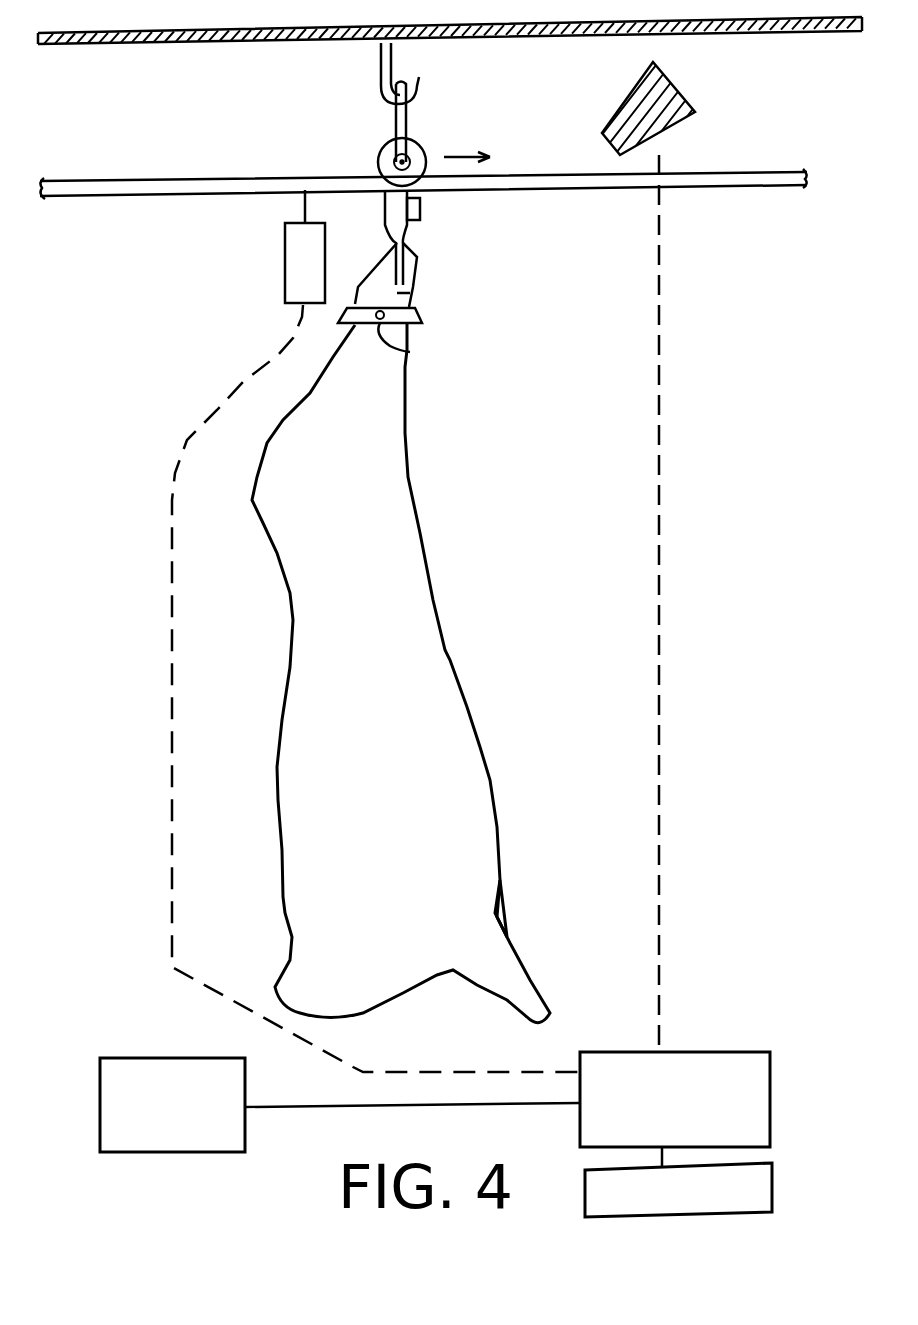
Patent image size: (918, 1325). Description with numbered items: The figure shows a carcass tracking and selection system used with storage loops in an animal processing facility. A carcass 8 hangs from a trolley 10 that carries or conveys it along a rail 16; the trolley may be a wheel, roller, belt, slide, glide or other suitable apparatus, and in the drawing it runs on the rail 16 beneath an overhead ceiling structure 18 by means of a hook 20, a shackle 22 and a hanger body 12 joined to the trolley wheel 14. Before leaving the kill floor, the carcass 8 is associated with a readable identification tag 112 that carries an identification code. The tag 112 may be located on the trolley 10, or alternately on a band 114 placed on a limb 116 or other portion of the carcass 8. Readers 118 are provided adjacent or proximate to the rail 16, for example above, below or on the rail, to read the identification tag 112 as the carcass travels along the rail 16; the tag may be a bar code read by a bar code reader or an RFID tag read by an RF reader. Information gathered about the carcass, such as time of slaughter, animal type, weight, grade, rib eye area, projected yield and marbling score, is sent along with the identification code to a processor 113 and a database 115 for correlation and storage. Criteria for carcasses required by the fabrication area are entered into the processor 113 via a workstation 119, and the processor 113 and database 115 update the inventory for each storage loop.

The carcass 8 is at (458, 782).
The trolley 10 is at (440, 127).
The hanger body 12 is at (406, 243).
The trolley wheel 14 is at (380, 150).
The rail 16 is at (737, 176).
The ceiling support 18 is at (738, 32).
The hook 20 is at (393, 62).
The shackle 22 is at (410, 110).
The identification tag 112 is at (422, 210).
The processor 113 is at (680, 1111).
The band 114 is at (403, 315).
The database 115 is at (678, 1190).
The limb 116 is at (410, 293).
The reader 118 is at (628, 108).
The workstation 119 is at (178, 1118).